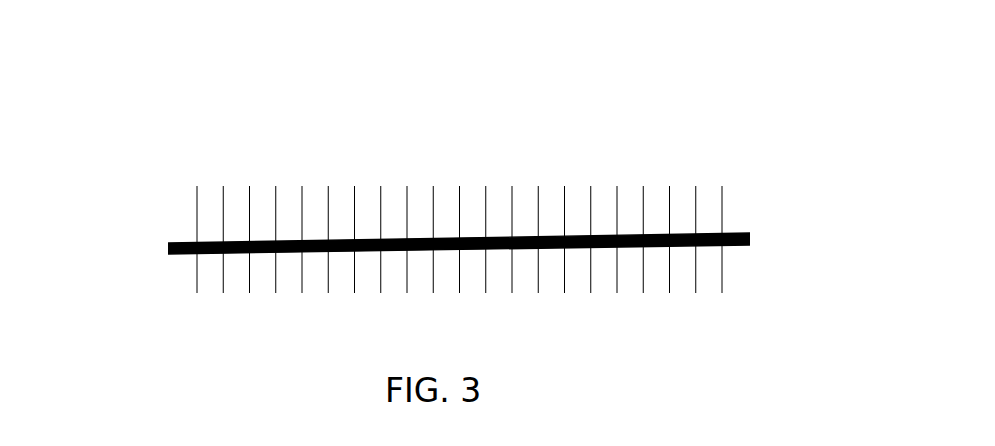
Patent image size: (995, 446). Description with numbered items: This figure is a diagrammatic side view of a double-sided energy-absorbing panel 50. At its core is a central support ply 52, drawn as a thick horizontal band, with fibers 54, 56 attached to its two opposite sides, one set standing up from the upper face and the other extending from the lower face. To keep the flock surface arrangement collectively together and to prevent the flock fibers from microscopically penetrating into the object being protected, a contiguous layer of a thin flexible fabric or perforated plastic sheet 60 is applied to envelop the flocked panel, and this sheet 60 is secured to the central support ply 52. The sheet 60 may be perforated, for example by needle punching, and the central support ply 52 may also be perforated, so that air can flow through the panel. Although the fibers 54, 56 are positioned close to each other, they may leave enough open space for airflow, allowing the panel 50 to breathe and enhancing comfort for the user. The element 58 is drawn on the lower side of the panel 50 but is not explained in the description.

The membrane electrode assembly 50 is at (418, 156).
The membrane 52 is at (653, 250).
The first surface of membrane 54 is at (725, 210).
The second surface of membrane 56 is at (725, 263).
The first electrode layer 58 is at (793, 288).
The second electrode layer 60 is at (802, 182).